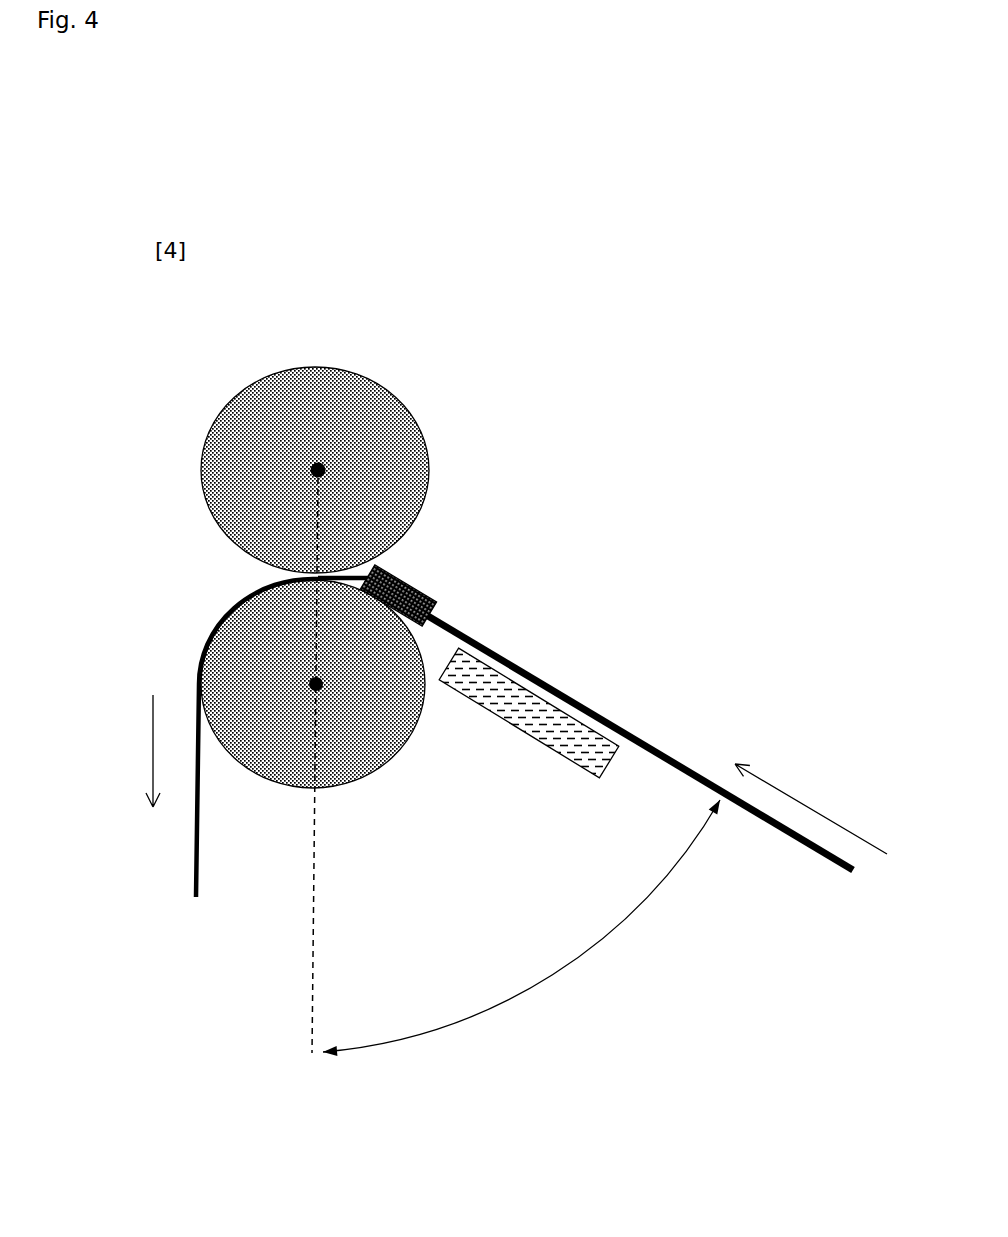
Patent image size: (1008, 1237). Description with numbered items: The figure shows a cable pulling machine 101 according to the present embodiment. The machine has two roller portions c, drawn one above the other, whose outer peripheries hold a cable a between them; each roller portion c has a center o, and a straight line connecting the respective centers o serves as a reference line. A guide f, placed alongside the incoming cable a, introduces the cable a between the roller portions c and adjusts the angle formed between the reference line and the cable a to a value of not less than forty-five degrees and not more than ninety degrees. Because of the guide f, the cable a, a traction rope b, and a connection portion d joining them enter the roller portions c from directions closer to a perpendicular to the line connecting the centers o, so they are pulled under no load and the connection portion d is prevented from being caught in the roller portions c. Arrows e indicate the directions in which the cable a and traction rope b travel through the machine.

The cable pulling machine 101 is at (413, 360).
The cable a is at (674, 756).
The traction rope b is at (193, 874).
The roller portions c is at (234, 396).
The connection portion d is at (397, 575).
The conveying direction e is at (150, 732).
The guide f is at (547, 750).
The centers of the roller portions o is at (326, 466).